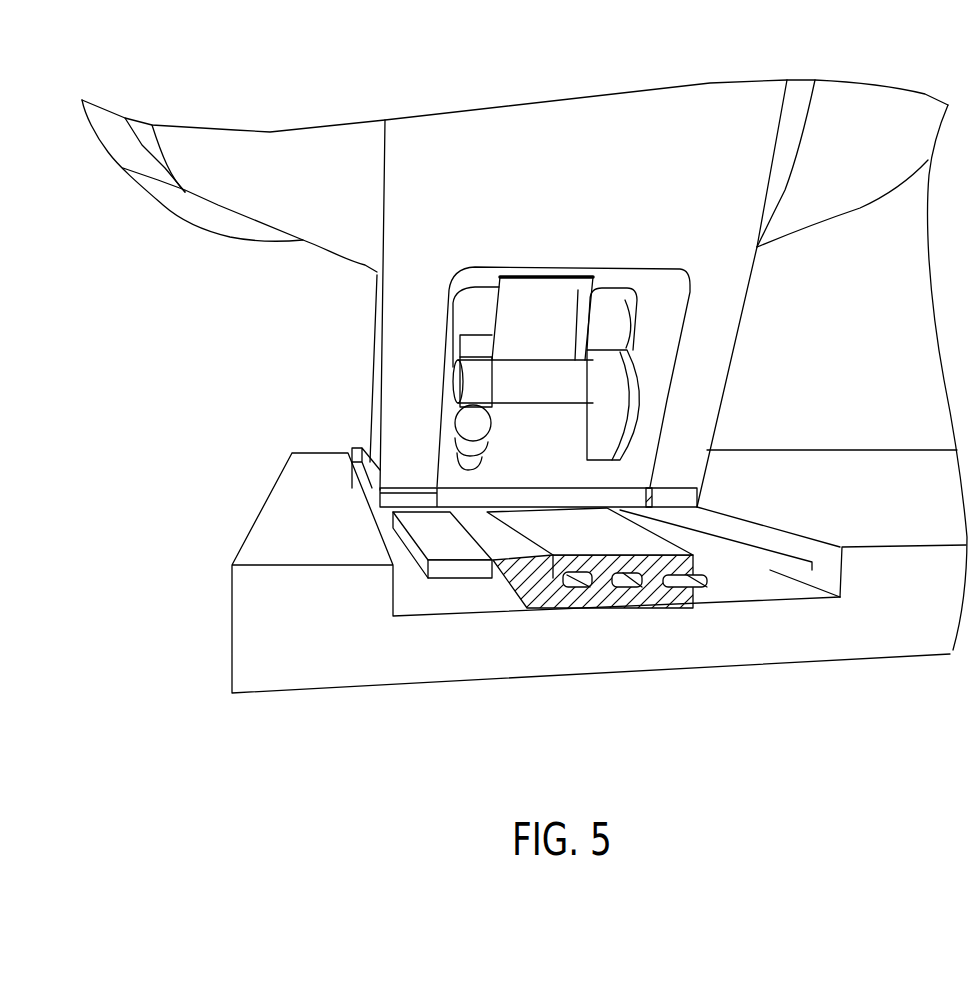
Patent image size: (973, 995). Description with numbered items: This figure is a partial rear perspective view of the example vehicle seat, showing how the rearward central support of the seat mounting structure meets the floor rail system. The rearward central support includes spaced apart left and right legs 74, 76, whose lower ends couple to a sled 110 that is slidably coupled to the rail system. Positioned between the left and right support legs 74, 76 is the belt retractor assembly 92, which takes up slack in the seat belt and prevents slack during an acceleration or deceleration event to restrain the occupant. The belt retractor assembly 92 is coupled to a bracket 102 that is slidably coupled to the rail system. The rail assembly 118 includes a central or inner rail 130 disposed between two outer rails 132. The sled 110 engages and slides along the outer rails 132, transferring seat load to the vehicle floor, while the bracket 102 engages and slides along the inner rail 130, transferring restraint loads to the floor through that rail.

The left leg 74 is at (397, 448).
The right leg 76 is at (702, 400).
The belt retractor assembly 92 is at (655, 352).
The bracket 102 is at (480, 545).
The sled 110 is at (388, 523).
The rail assembly 118 is at (647, 607).
The inner rail 130 is at (573, 573).
The outer rails 132 is at (447, 573).